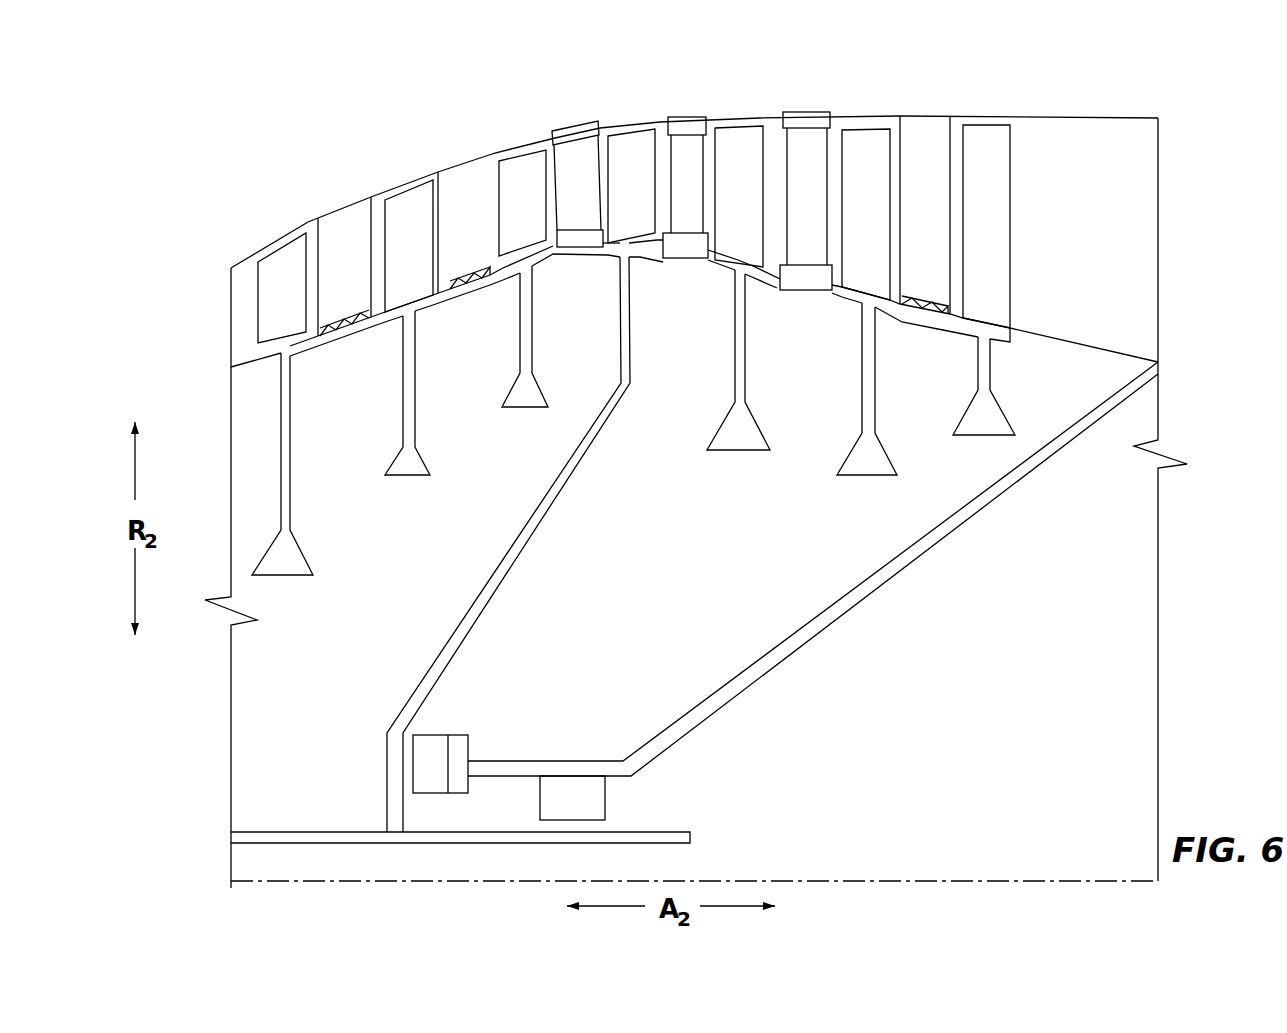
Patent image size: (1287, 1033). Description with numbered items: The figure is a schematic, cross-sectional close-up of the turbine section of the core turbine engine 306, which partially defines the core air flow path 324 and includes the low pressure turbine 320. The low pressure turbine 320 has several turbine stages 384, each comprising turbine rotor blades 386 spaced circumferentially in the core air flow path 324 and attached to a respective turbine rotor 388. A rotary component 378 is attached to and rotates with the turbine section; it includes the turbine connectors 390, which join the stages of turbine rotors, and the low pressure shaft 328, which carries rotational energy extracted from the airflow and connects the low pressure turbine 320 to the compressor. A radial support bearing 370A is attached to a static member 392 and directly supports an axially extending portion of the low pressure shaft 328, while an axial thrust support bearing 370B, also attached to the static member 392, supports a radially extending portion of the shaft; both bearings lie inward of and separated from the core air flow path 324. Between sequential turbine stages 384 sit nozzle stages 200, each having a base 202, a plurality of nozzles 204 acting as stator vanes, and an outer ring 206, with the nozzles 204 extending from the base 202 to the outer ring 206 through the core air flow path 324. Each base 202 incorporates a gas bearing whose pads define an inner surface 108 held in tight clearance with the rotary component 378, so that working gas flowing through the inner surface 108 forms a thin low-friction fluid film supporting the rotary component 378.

The inner surface 108 is at (582, 250).
The nozzle stage 200 is at (573, 122).
The base 202 is at (563, 247).
The nozzles 204 is at (558, 150).
The outer ring 206 is at (653, 120).
The core turbine engine 306 is at (278, 178).
The low pressure turbine 320 is at (375, 162).
The core air flow path 324 is at (1038, 150).
The low pressure shaft 328 is at (288, 827).
The radial support bearing 370A is at (582, 790).
The axial thrust support bearing 370B is at (433, 753).
The rotary component 378 is at (553, 557).
The turbine stage 384 is at (523, 143).
The turbine rotor blades 386 is at (522, 203).
The turbine rotor 388 is at (522, 340).
The turbine connectors 390 is at (612, 262).
The static member 392 is at (793, 638).